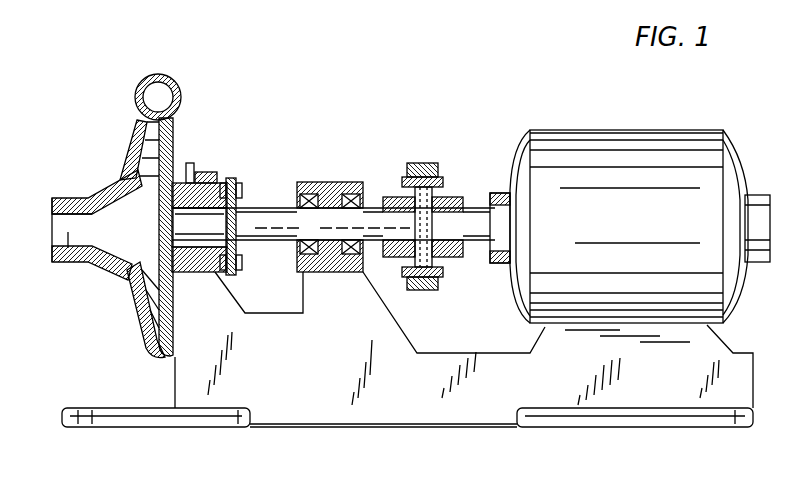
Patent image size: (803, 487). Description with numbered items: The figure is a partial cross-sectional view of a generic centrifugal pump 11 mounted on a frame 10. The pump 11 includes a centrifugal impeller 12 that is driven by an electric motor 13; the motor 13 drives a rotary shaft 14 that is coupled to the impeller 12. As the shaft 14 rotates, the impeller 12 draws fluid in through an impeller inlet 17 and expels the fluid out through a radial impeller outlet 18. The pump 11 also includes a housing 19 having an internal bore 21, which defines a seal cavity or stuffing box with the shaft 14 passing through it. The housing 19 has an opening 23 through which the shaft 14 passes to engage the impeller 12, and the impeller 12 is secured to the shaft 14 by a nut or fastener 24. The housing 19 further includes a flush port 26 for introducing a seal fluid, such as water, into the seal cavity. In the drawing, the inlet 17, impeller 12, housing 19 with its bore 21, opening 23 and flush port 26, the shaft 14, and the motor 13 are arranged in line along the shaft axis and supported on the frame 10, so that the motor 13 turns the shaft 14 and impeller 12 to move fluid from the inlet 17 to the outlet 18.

The frame 10 is at (463, 413).
The centrifugal pump 11 is at (205, 107).
The centrifugal impeller 12 is at (138, 297).
The electric motor 13 is at (553, 145).
The rotary shaft 14 is at (278, 208).
The impeller inlet 17 is at (67, 256).
The radial impeller outlet 18 is at (158, 98).
The housing 19 is at (232, 183).
The internal bore 21 is at (193, 275).
The opening 23 is at (207, 172).
The nut or fastener 24 is at (103, 198).
The flush port 26 is at (191, 163).